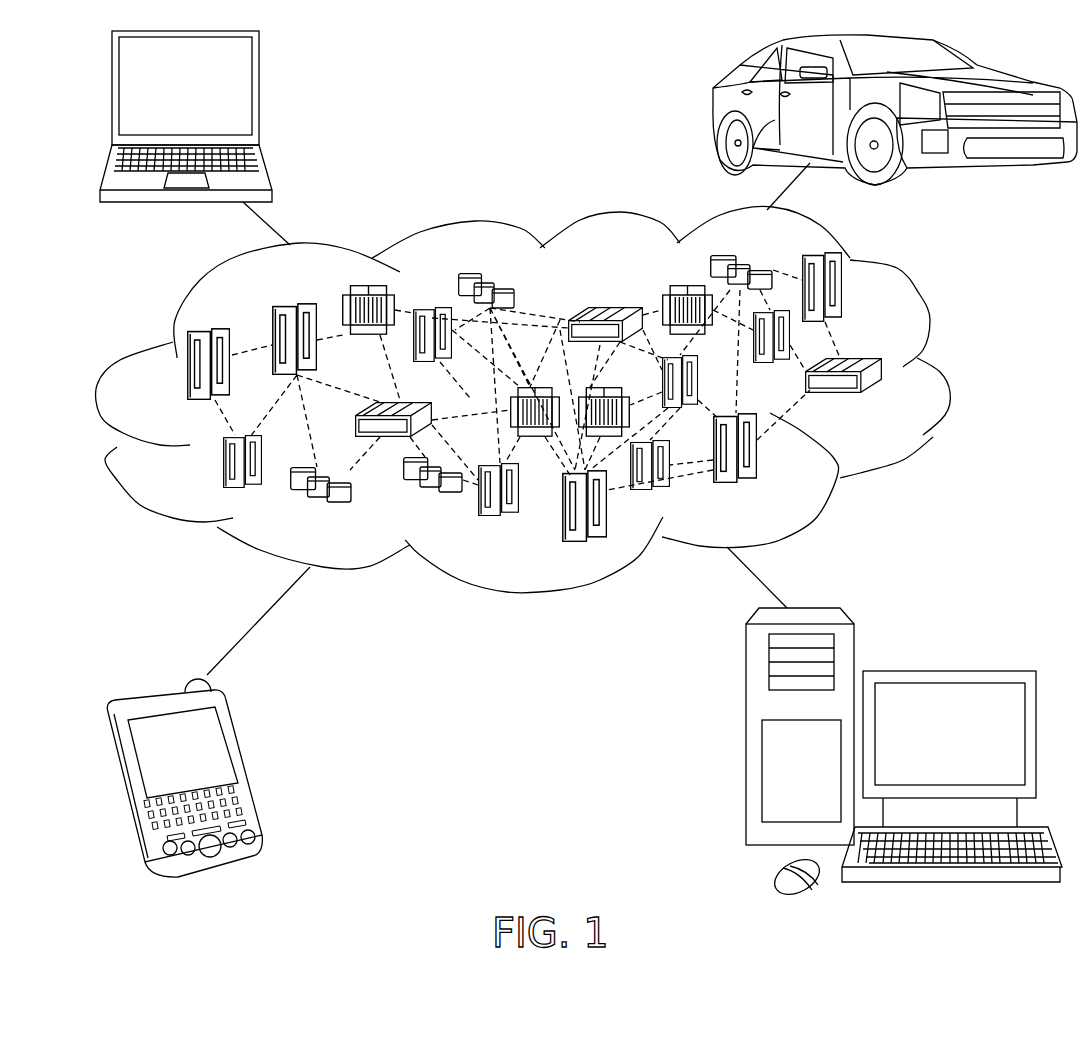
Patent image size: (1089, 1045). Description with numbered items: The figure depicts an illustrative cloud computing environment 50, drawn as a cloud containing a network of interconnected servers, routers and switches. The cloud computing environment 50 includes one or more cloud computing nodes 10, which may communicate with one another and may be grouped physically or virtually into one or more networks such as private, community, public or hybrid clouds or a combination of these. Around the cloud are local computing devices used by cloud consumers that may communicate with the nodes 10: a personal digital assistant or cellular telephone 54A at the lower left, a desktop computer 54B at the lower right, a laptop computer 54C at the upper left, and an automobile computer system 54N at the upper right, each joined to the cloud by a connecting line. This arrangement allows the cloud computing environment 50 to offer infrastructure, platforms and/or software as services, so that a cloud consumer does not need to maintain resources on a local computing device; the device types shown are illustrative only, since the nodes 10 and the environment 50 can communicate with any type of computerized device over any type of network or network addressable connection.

The cloud computing node 10 is at (895, 410).
The cloud computing environment 50 is at (945, 371).
The personal digital assistant (PDA) or cellular telephone 54A is at (247, 765).
The desktop computer 54B is at (945, 670).
The laptop computer 54C is at (258, 94).
The automobile computer system 54N is at (717, 108).